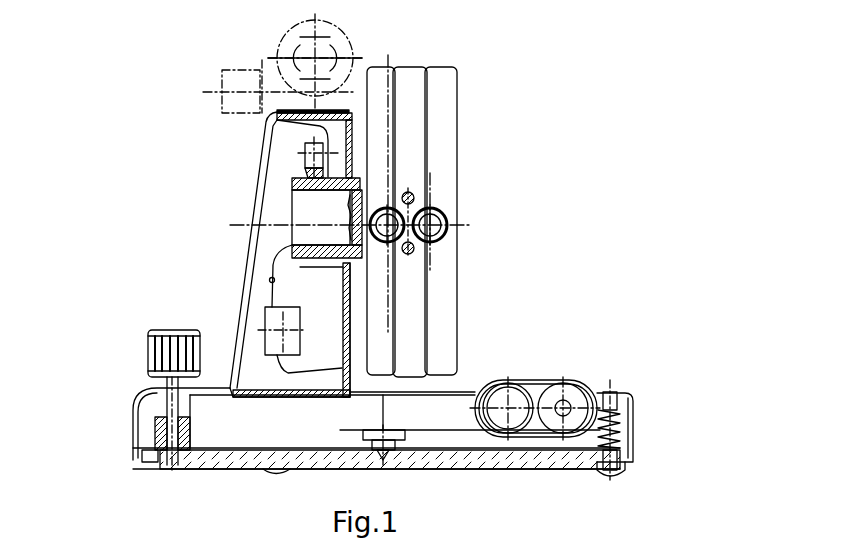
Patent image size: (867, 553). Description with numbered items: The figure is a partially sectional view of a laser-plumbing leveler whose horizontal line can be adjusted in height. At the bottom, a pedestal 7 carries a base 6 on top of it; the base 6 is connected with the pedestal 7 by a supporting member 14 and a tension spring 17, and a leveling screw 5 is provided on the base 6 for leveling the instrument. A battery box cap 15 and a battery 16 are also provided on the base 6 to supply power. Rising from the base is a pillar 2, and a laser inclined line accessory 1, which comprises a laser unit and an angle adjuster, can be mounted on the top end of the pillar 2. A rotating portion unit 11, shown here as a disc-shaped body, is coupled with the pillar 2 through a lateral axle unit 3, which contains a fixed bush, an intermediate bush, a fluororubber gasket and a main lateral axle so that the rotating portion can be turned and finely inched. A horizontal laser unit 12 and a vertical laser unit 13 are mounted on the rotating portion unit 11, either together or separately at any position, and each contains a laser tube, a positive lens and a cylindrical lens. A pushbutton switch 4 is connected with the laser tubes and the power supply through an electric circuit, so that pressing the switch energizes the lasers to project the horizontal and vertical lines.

The inclined line accessory 1 is at (280, 84).
The pillar unit 2 is at (290, 133).
The lateral axle unit 3 is at (303, 173).
The pushbutton switch 4 is at (263, 302).
The leveling screw 5 is at (177, 330).
The base unit 6 is at (148, 387).
The pedestal unit 7 is at (142, 457).
The rotating portion unit 11 is at (440, 150).
The horizontal laser unit 12 is at (425, 202).
The vertical laser unit 13 is at (438, 222).
The supporting member 14 is at (405, 428).
The battery box cap 15 is at (520, 380).
The battery 16 is at (610, 393).
The tension spring unit 17 is at (630, 403).